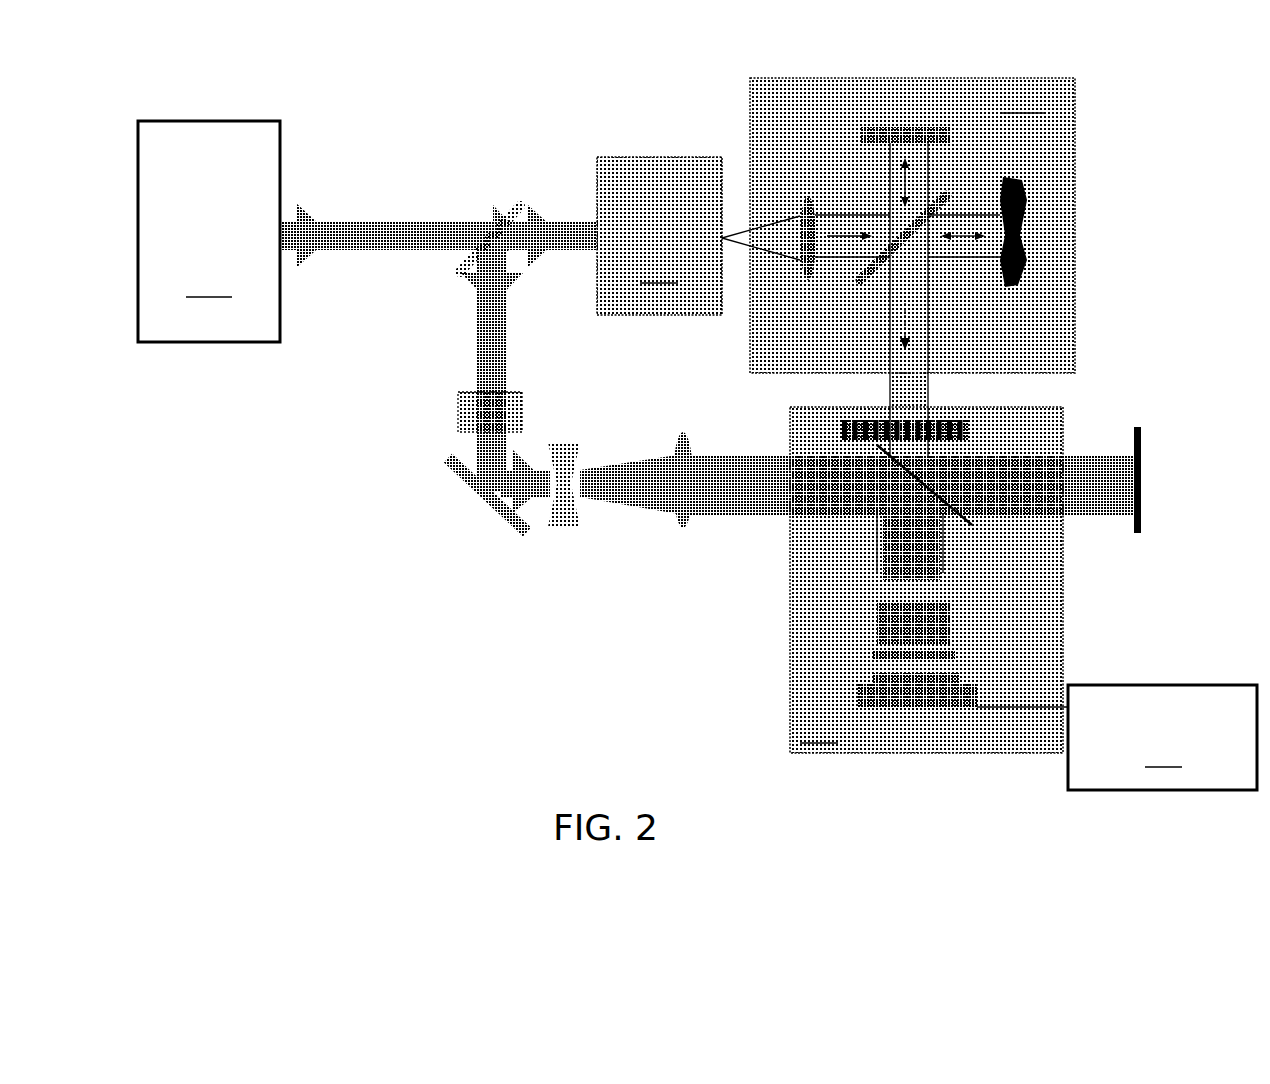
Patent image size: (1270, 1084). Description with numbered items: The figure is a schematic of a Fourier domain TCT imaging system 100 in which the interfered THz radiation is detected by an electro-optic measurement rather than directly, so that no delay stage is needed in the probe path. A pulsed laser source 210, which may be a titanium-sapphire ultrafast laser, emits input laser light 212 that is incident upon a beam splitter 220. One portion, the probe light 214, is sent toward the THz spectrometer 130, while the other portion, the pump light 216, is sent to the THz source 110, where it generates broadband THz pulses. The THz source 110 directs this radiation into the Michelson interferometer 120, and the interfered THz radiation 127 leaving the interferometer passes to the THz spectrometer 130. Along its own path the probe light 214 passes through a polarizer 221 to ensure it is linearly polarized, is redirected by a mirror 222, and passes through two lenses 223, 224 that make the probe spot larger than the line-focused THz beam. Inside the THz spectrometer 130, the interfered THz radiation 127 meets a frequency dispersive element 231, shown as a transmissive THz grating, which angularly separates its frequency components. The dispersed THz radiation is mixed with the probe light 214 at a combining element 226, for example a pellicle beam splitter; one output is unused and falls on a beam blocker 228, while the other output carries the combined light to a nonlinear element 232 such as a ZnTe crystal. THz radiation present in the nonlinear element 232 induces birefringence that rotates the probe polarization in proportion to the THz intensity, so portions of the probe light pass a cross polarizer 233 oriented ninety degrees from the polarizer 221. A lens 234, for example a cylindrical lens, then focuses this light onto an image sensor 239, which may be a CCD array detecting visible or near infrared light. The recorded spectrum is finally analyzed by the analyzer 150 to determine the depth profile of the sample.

The Fourier domain TCT imaging system 100 is at (449, 703).
The THz radiation source 110 is at (659, 236).
The Michelson interferometer 120 is at (898, 238).
The interfered THz radiation 127 is at (905, 325).
The THz spectrometer 130 is at (917, 568).
The analyzer 150 is at (1162, 737).
The pulsed laser source 210 is at (209, 231).
The input laser light 212 is at (385, 248).
The probe light 214 is at (475, 298).
The pump light 216 is at (533, 207).
The beam splitter 220 is at (460, 250).
The polarizer 221 is at (458, 405).
The mirror 222 is at (498, 502).
The lens 223 is at (566, 528).
The lens 224 is at (684, 528).
The combining element 226 is at (877, 448).
The beam blocker 228 is at (1138, 535).
The frequency dispersive element 231 is at (842, 430).
The nonlinear element 232 is at (880, 582).
The cross polarizer 233 is at (952, 622).
The lens 234 is at (873, 656).
The image sensor 239 is at (858, 696).